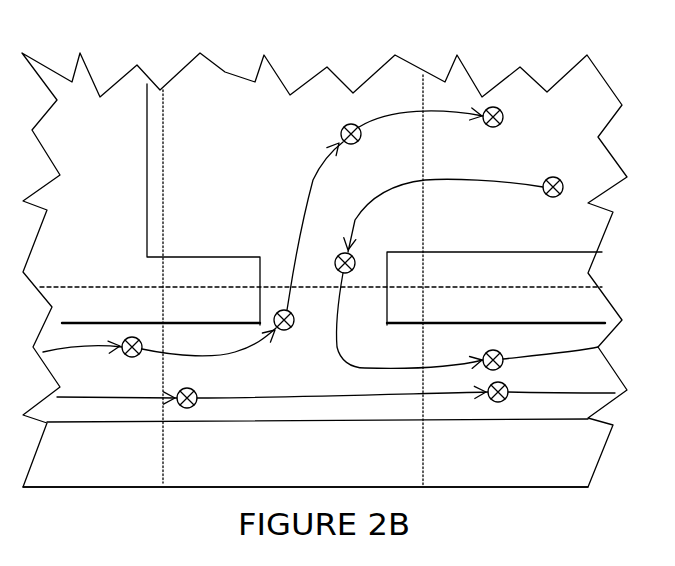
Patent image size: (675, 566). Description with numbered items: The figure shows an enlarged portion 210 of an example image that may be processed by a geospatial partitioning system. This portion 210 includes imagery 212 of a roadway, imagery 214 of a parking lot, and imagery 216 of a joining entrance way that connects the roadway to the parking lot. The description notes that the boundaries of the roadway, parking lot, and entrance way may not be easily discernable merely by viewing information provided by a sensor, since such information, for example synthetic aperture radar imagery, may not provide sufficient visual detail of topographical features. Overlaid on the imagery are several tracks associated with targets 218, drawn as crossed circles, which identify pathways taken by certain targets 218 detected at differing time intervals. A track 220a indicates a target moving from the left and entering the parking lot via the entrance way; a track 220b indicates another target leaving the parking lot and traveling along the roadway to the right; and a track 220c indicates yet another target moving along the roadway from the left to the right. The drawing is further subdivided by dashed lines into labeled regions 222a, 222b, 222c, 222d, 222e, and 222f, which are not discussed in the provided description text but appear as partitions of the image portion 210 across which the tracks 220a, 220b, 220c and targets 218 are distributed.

The enlarged portion 210 is at (477, 82).
The imagery of a roadway 212 is at (258, 425).
The imagery of a parking lot 214 is at (147, 232).
The imagery of a joining entrance way 216 is at (388, 302).
The targets 218 is at (492, 128).
The track 220a is at (302, 220).
The track 220b is at (440, 185).
The track 220c is at (565, 400).
The region / tile 222a is at (117, 120).
The region / tile 222b is at (285, 115).
The region / tile 222c is at (595, 122).
The region / tile 222d is at (143, 317).
The region / tile 222e is at (345, 376).
The region / tile 222f is at (590, 319).